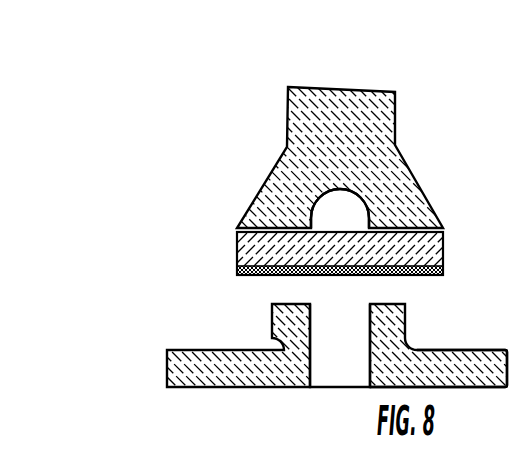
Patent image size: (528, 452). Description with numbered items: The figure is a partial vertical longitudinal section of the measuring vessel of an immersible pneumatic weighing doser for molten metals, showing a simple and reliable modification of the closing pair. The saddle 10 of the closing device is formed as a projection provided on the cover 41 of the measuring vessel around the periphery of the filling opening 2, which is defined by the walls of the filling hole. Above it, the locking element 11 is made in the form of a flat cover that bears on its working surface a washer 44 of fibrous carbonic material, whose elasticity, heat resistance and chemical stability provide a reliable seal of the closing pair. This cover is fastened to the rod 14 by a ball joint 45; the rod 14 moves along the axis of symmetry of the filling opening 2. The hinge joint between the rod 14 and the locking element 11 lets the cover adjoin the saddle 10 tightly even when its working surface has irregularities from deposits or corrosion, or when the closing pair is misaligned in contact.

The rod 14 is at (370, 108).
The ball joint 45 is at (360, 211).
The locking element 11 is at (443, 250).
The washer 44 is at (255, 273).
The saddle 10 is at (397, 325).
The cover of the measuring vessel 41 is at (490, 350).
The filling opening 2 is at (318, 378).